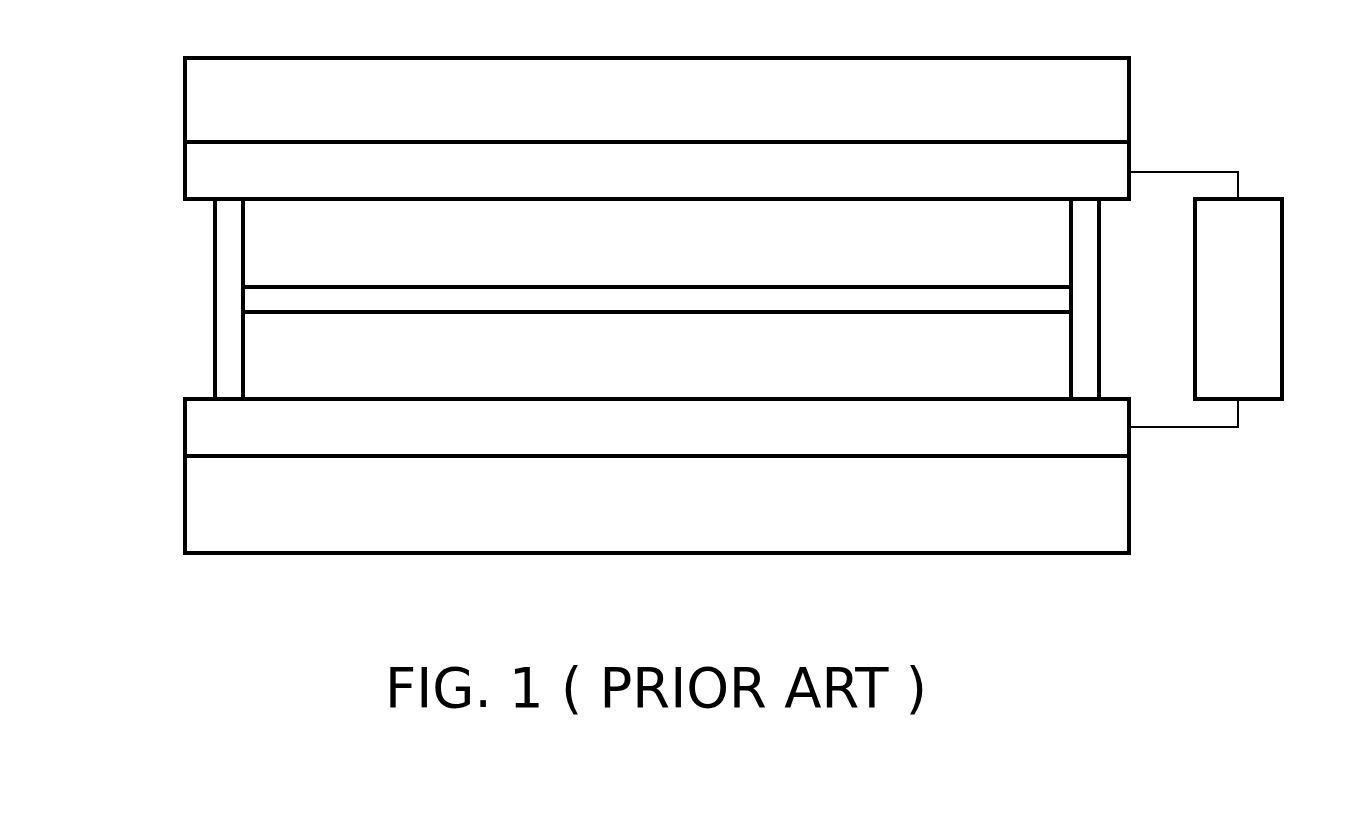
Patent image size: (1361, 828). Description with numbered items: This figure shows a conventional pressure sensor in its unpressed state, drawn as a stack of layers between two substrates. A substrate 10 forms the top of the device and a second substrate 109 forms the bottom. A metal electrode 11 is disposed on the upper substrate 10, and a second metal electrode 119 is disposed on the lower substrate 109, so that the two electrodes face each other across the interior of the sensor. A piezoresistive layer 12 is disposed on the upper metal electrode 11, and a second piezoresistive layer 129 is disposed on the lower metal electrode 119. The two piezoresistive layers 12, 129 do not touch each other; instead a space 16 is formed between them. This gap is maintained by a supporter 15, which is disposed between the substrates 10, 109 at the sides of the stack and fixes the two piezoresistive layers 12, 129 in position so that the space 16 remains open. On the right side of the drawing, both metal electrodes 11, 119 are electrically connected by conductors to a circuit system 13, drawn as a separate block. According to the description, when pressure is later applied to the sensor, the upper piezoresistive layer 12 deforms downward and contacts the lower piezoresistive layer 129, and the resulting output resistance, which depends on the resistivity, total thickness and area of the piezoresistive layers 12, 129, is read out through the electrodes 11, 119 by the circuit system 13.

The substrate 10 is at (195, 102).
The metal electrode 11 is at (195, 172).
The supporter 15 is at (225, 219).
The piezoresistive layer 12 is at (265, 257).
The space 16 is at (265, 299).
The piezoresistive layer 129 is at (265, 359).
The metal electrode 119 is at (195, 428).
The substrate 109 is at (195, 505).
The circuit system 13 is at (1270, 300).